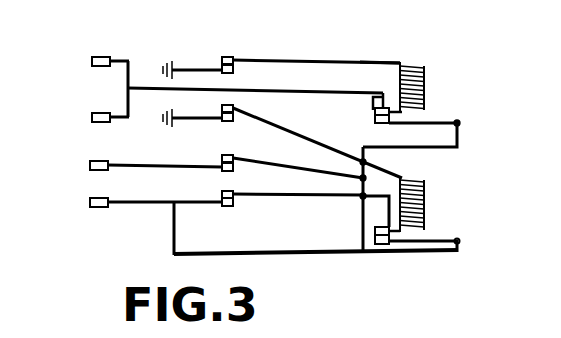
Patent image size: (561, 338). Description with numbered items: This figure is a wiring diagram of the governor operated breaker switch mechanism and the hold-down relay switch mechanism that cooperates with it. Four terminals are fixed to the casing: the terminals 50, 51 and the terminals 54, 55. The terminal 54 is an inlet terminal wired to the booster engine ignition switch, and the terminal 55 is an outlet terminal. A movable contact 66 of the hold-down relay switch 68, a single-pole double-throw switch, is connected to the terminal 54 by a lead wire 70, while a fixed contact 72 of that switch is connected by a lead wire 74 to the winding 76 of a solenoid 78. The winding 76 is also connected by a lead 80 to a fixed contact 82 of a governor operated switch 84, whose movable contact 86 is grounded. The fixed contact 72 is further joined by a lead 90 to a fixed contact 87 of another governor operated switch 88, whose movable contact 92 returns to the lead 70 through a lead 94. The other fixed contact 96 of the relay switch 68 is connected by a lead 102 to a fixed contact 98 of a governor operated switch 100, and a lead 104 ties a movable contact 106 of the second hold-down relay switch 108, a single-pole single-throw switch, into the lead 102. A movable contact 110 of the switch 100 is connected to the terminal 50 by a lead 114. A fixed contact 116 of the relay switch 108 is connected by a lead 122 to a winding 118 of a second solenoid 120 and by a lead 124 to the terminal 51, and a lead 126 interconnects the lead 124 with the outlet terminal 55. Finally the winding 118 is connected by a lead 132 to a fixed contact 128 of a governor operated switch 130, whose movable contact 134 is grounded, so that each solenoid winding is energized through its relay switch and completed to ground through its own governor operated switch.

The terminal 55 is at (93, 60).
The terminal 51 is at (93, 117).
The terminal 50 is at (92, 165).
The inlet terminal 54 is at (92, 207).
The lead 126 is at (132, 62).
The lead 124 is at (156, 90).
The lead 114 is at (147, 164).
The lead 94 is at (183, 200).
The movable contact 134 is at (223, 68).
The governor operated switch 130 is at (236, 68).
The fixed contact 128 is at (228, 57).
The lead 132 is at (300, 60).
The lead 122 is at (393, 85).
The governor operated switch 84 is at (221, 108).
The fixed contact 82 is at (236, 107).
The movable contact 86 is at (221, 118).
The lead 80 is at (305, 140).
The fixed contact 98 is at (229, 155).
The movable contact 110 is at (221, 164).
The governor operated switch 100 is at (237, 168).
The fixed contact 87 is at (223, 195).
The governor operated switch 88 is at (236, 200).
The lead 90 is at (288, 196).
The movable contact 92 is at (222, 203).
The lead wire 70 is at (174, 224).
The lead 102 is at (295, 155).
The fixed contact 116 is at (377, 96).
The hold-down relay switch 108 is at (375, 111).
The movable contact 106 is at (380, 123).
The lead 104 is at (413, 148).
The solenoid 120 is at (487, 73).
The winding 118 is at (425, 93).
The solenoid 78 is at (433, 196).
The winding 76 is at (426, 220).
The fixed contact 72 is at (360, 222).
The movable contact 66 is at (375, 232).
The hold-down relay switch 68 is at (392, 240).
The lead wire 74 is at (395, 237).
The fixed contact 96 is at (387, 250).